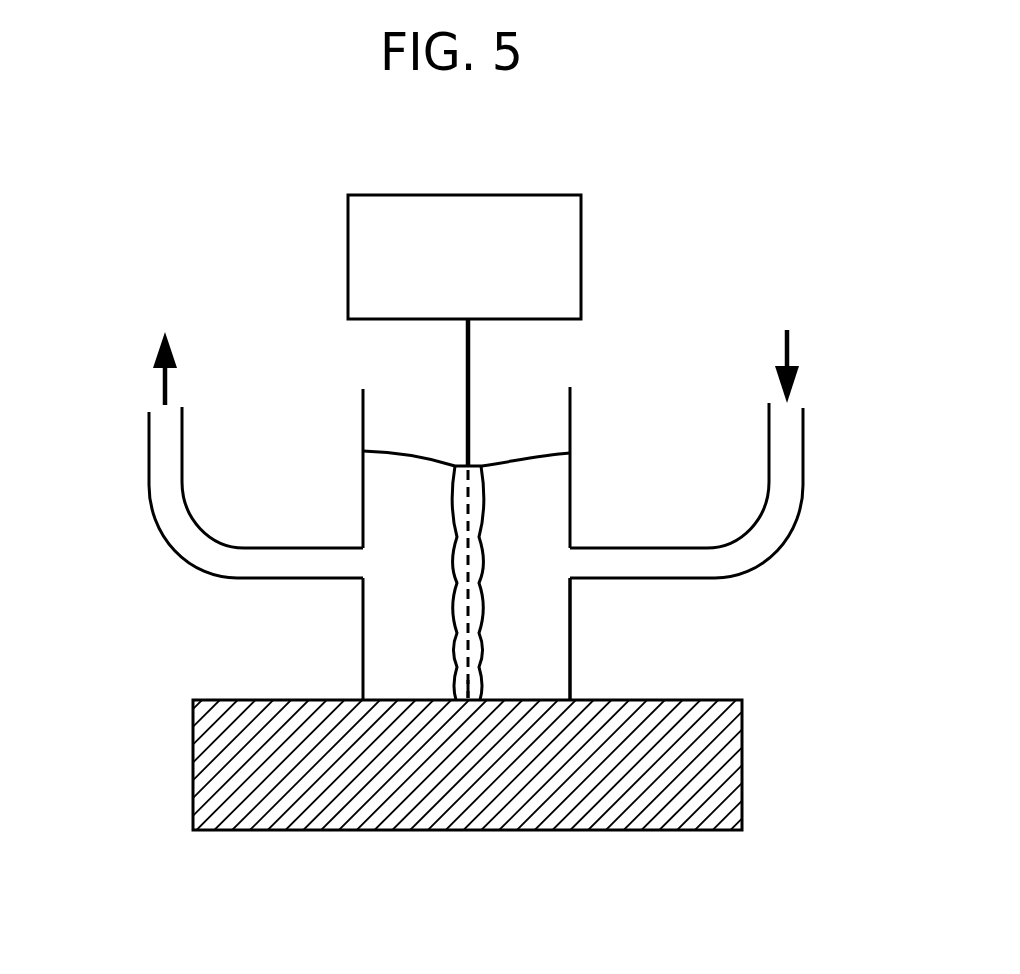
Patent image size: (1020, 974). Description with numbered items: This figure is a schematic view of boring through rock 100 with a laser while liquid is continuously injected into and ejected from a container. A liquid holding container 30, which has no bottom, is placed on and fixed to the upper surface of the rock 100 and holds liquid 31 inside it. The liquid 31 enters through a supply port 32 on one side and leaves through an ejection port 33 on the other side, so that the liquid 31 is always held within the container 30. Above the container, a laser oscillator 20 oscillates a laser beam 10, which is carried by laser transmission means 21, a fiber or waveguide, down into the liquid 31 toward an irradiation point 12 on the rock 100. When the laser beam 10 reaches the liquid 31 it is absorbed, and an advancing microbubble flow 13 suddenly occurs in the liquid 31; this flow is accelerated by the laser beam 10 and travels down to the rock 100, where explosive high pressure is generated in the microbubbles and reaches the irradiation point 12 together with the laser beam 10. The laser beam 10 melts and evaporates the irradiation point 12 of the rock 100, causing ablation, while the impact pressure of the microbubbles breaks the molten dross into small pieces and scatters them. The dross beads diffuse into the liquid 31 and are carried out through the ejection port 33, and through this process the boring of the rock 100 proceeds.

The laser oscillator 20 is at (567, 220).
The laser transmission means 21 is at (468, 372).
The liquid holding container 30 is at (570, 490).
The liquid 31 is at (543, 628).
The supply port 32 is at (787, 352).
The ejection port 33 is at (163, 383).
The advancing microbubble flow 13 is at (453, 633).
The laser beam 10 is at (470, 540).
The irradiation point 12 is at (464, 700).
The rock 100 is at (708, 766).